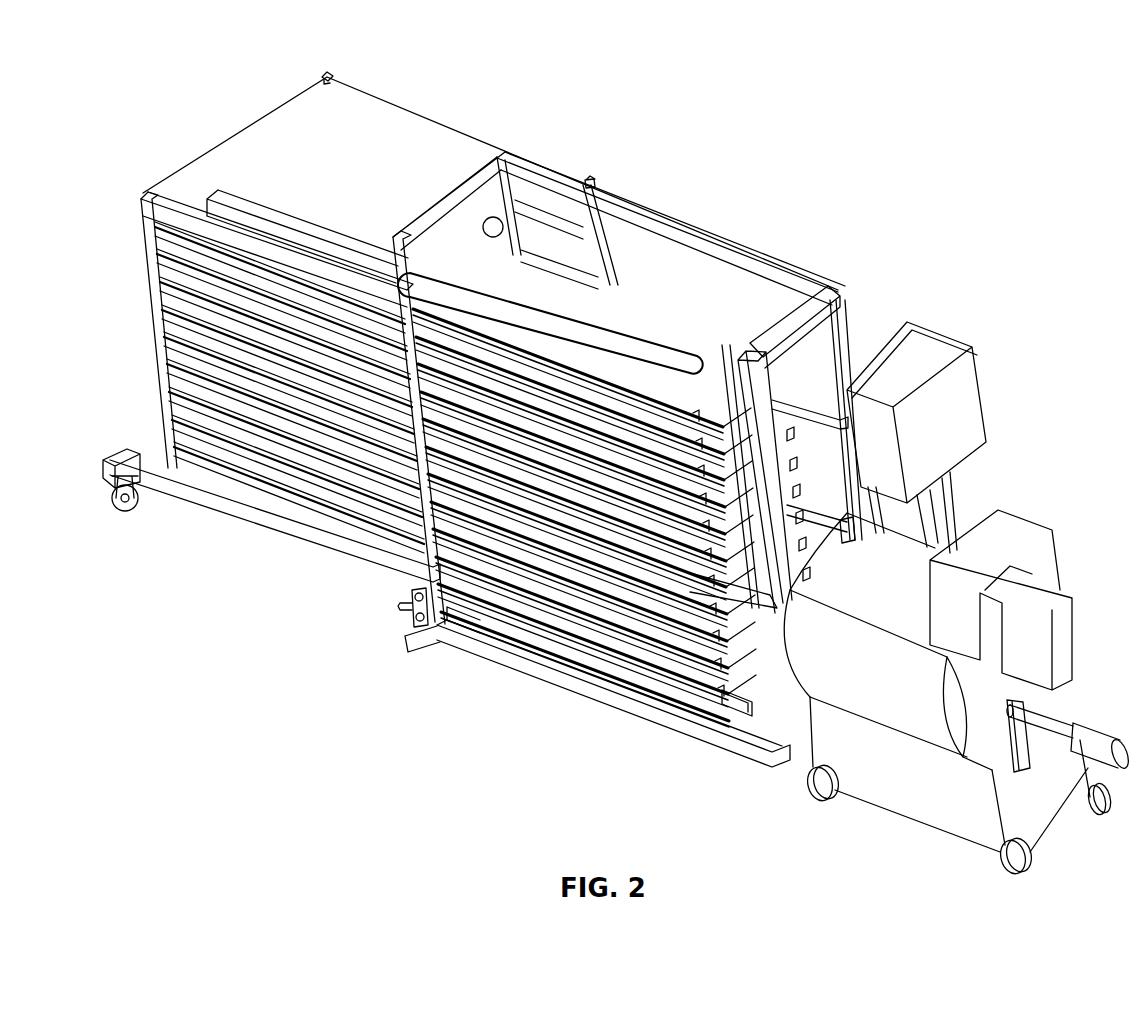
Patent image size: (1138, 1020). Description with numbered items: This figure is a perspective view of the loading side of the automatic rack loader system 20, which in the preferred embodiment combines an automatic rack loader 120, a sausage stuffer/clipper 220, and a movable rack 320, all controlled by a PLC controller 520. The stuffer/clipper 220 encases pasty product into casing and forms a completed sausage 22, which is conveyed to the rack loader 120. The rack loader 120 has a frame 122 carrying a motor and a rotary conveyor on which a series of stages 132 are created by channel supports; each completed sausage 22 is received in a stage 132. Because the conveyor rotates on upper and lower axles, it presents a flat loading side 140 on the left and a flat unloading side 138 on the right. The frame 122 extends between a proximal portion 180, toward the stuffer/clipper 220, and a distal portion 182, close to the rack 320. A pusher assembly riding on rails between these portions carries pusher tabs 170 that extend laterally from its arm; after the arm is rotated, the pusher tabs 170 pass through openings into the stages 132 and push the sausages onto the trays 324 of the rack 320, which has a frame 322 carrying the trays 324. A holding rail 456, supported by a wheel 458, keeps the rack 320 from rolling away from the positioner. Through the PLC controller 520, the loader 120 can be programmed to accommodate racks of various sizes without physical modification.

The system 20 is at (874, 98).
The sausage 22 is at (717, 520).
The automatic rack loader 120 is at (718, 260).
The frame 122 is at (667, 247).
The stages 132 is at (717, 703).
The unloading side 138 is at (822, 262).
The loading side 140 is at (485, 690).
The pusher tabs 170 is at (847, 362).
The proximal portion 180 is at (777, 752).
The distal portion 182 is at (445, 630).
The sausage stuffer/clipper 220 is at (1020, 522).
The movable rack 320 is at (300, 113).
The frame 322 is at (140, 256).
The trays 324 is at (160, 269).
The holding rail 456 is at (283, 530).
The wheel 458 is at (133, 511).
The PLC controller 520 is at (968, 395).